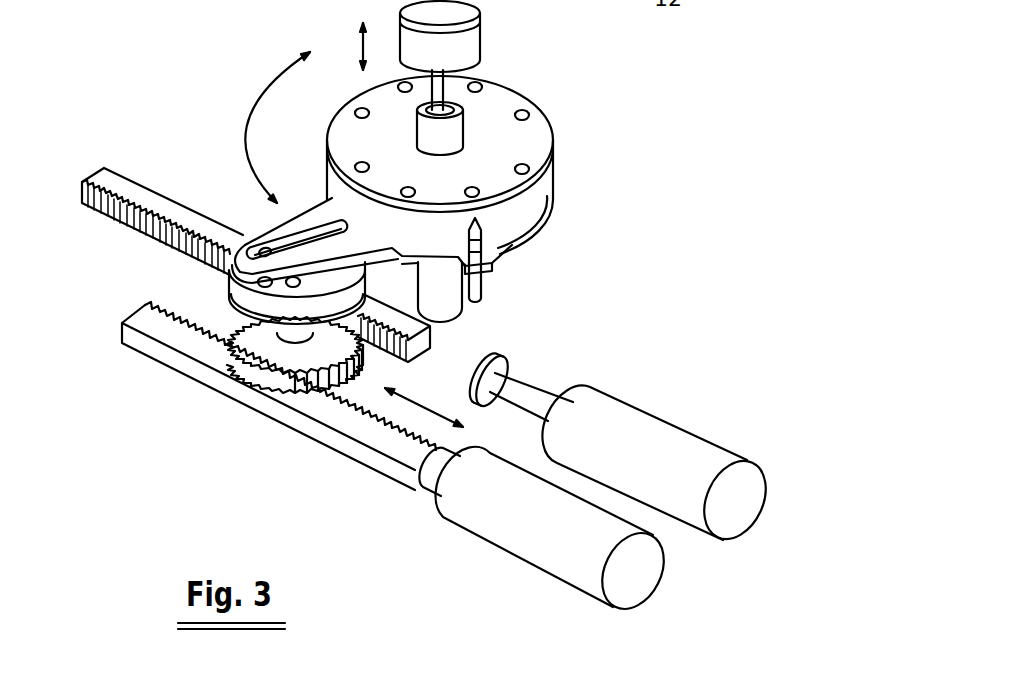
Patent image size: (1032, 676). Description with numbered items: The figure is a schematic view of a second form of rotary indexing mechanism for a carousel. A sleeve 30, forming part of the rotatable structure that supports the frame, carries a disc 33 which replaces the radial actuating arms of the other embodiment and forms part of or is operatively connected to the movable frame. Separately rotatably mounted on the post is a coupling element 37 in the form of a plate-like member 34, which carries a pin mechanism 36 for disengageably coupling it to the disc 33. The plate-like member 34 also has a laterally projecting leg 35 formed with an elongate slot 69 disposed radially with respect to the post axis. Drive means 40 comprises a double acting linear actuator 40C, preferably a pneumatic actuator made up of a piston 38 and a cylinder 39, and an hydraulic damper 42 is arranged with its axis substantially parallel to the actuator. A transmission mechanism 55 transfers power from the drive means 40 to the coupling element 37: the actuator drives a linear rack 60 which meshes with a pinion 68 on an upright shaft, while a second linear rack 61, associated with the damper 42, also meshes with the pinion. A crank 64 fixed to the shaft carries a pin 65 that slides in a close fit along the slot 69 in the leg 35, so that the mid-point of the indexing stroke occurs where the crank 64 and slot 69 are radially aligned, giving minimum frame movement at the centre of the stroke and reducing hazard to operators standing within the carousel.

The sleeve 30 is at (453, 128).
The disc 33 is at (550, 125).
The plate-like member 34 is at (543, 187).
The laterally projecting leg 35 is at (318, 253).
The pin mechanism 36 is at (487, 228).
The coupling element 37 is at (560, 222).
The piston 38 is at (420, 483).
The cylinder 39 is at (553, 497).
The drive means 40 is at (563, 590).
The double acting linear actuator 40C is at (492, 550).
The hydraulic damper 42 is at (653, 412).
The transmission mechanism 55 is at (127, 297).
The linear rack 60 is at (247, 392).
The linear rack 61 is at (122, 190).
The crank 64 is at (242, 290).
The pin 65 is at (265, 250).
The pinion 68 is at (257, 338).
The elongate slot 69 is at (307, 235).